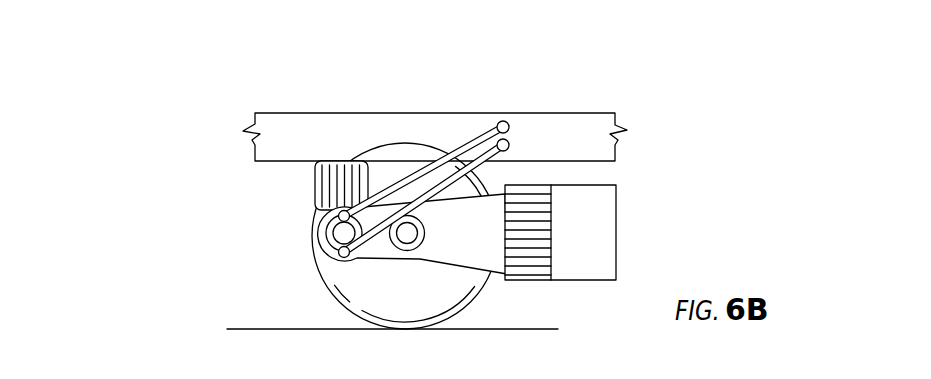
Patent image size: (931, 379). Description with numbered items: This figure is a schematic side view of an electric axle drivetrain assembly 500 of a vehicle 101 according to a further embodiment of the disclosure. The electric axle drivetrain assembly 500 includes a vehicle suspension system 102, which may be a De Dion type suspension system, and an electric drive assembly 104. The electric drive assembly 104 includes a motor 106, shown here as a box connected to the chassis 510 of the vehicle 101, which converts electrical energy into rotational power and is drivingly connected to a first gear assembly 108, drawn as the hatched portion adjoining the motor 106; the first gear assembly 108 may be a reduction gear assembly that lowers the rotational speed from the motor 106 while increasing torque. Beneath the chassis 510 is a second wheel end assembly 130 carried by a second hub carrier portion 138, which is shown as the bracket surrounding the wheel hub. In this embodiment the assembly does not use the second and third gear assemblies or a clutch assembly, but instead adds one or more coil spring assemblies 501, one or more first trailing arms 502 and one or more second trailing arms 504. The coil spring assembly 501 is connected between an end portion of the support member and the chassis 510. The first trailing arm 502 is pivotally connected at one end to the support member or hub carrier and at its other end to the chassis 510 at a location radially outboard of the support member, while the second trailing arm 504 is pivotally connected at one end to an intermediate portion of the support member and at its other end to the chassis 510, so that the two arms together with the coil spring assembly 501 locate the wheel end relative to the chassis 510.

The electric axle drivetrain assembly 500 is at (437, 193).
The vehicle 101 is at (510, 129).
The vehicle suspension system 102 is at (633, 233).
The electric drive assembly 104 is at (617, 254).
The motor 106 is at (600, 247).
The first gear assembly 108 is at (525, 278).
The second wheel end assembly 130 is at (328, 199).
The second hub carrier portion 138 is at (315, 238).
The coil spring assembly 501 is at (318, 184).
The first trailing arm 502 is at (461, 150).
The second trailing arm 504 is at (484, 147).
The chassis 510 is at (570, 150).